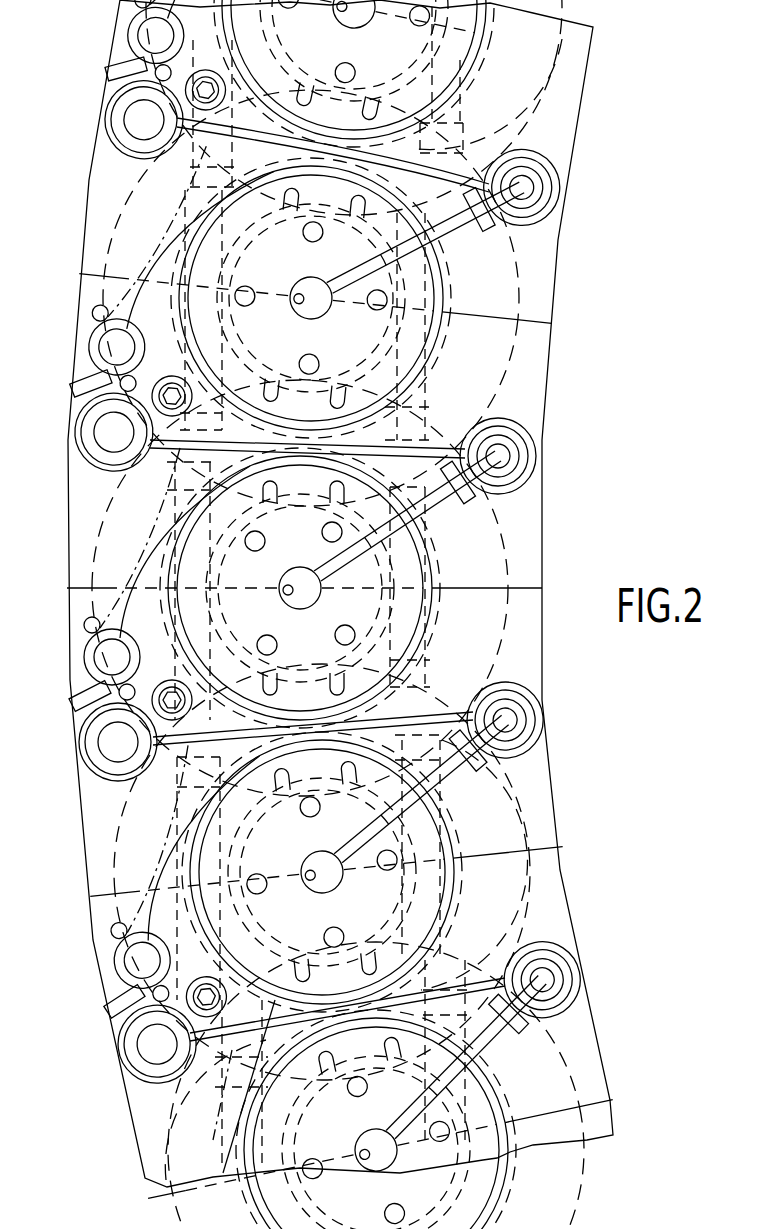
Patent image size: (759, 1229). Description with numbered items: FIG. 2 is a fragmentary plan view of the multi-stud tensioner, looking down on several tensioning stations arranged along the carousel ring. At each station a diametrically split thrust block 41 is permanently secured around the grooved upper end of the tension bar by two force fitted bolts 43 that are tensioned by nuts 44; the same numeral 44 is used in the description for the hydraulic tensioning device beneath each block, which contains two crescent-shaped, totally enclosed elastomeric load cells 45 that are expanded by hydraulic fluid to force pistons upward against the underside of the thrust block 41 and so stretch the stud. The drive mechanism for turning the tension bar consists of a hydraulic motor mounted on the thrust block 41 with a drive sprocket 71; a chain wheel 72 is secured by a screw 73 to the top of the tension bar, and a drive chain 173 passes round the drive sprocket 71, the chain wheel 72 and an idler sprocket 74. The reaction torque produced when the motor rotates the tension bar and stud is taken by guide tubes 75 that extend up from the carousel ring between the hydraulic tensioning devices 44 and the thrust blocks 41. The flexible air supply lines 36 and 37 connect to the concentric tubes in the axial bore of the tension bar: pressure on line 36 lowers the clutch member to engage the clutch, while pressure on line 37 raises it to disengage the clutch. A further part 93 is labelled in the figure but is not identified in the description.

The flexible air supply line 36 is at (350, 845).
The flexible air supply line 37 is at (418, 784).
The thrust block 41 is at (541, 830).
The force fitted bolts 43 is at (507, 794).
The hydraulic tensioning device 44 is at (505, 667).
The elastomeric load cells 45 is at (95, 528).
The drive sprocket 71 is at (133, 973).
The chain wheel 72 is at (432, 906).
The screw 73 is at (382, 876).
The idler sprocket 74 is at (375, 1066).
The guide tubes 75 is at (536, 448).
The hub 93 is at (317, 878).
The drive chain 173 is at (112, 604).